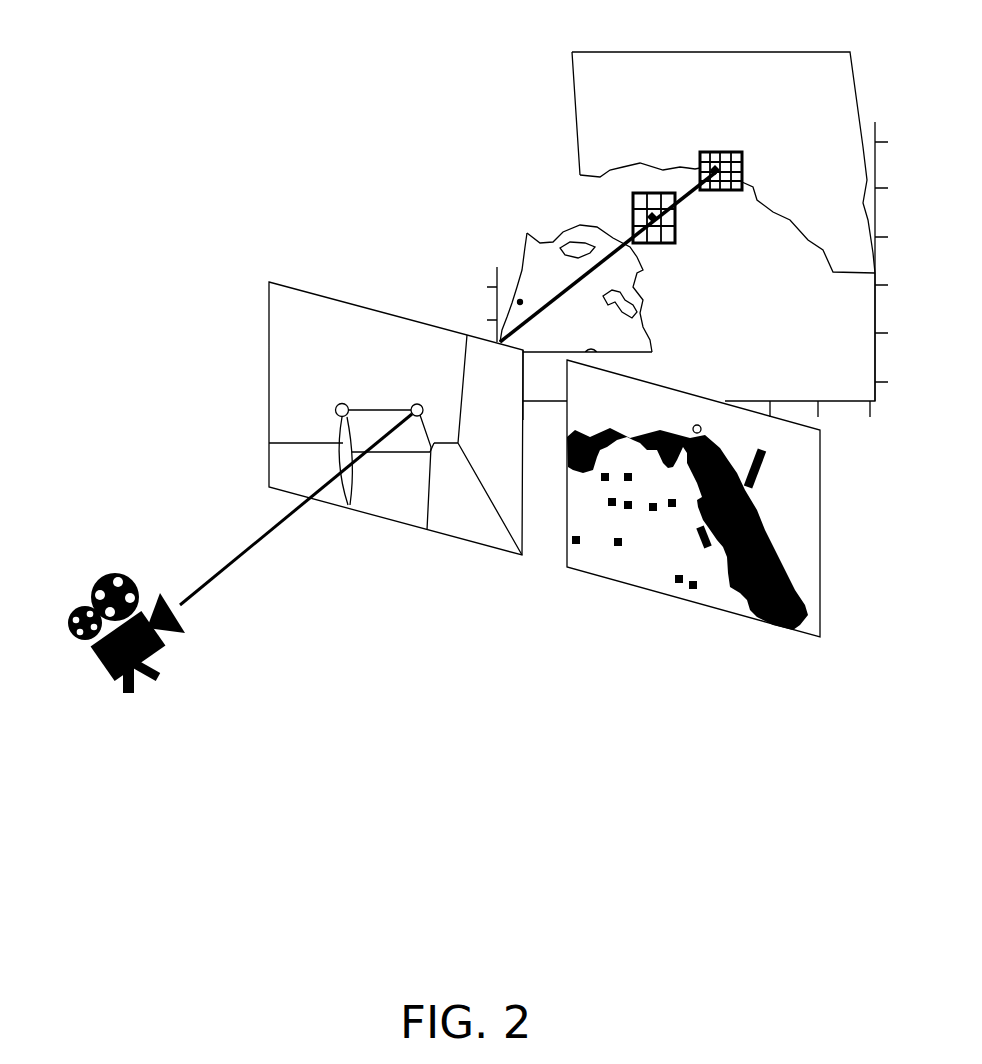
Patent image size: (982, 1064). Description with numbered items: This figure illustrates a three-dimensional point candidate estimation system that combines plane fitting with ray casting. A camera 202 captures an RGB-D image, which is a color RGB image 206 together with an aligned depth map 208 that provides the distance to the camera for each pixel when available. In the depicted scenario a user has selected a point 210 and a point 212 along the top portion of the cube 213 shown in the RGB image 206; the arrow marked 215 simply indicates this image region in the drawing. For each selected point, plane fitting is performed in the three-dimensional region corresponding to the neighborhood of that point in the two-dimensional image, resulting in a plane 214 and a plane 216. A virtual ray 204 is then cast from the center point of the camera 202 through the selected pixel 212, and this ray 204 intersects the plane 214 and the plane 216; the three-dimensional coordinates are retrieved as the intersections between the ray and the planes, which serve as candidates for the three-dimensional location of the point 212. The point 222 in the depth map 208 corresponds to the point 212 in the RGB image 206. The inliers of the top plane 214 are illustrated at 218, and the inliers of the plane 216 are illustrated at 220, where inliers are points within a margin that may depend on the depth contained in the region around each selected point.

The camera 202 is at (99, 674).
The ray 204 is at (212, 577).
The RGB image 206 is at (297, 282).
The depth map 208 is at (683, 600).
The point 210 is at (337, 405).
The point 212 is at (413, 405).
The cube 213 is at (392, 505).
The plane 214 is at (666, 244).
The region 215 is at (352, 336).
The plane 216 is at (720, 152).
The inliers of the top plane 218 is at (527, 232).
The inliers of the plane 220 is at (798, 52).
The point 222 is at (703, 432).